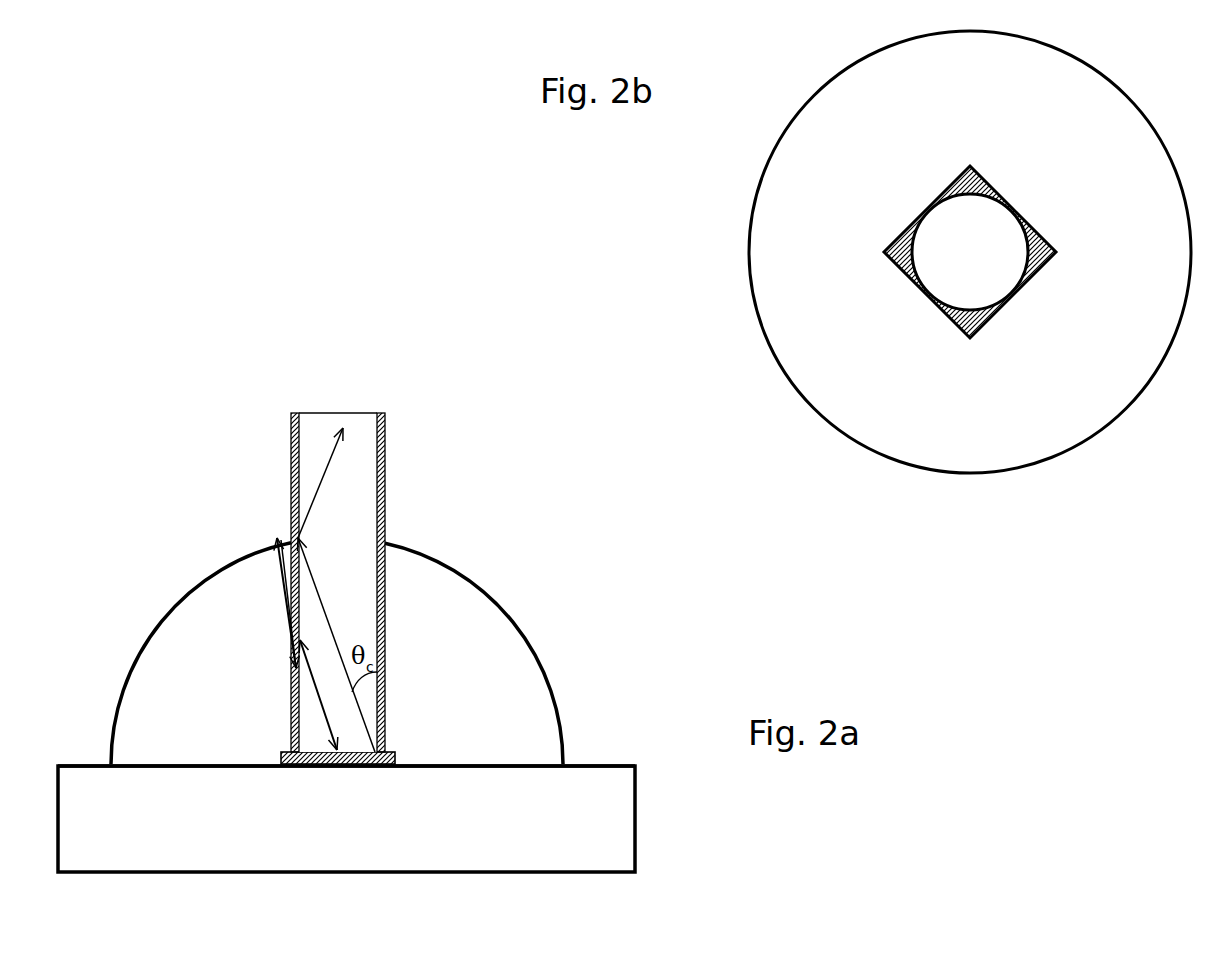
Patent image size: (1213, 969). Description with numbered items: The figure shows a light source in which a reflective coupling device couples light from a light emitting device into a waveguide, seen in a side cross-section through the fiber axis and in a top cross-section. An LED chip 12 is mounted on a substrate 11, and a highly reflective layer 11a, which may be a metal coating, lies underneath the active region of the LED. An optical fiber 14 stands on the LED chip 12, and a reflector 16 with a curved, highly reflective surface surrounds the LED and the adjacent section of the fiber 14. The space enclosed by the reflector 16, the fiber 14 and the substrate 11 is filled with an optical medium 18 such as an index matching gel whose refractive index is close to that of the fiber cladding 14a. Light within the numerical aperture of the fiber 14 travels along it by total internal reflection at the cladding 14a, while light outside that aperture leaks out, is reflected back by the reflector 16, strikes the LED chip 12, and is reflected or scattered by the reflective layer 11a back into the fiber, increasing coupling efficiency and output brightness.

In FIG. 2a, the substrate 11 is at (618, 819).
In FIG. 2a, the reflective layer 11a is at (352, 770).
In FIG. 2a, the LED chip 12 is at (393, 750).
In FIG. 2b, the LED chip 12 is at (1042, 228).
In FIG. 2a, the optical fiber 14 is at (281, 582).
In FIG. 2b, the optical fiber 14 is at (942, 222).
In FIG. 2a, the fiber cladding 14a is at (312, 437).
In FIG. 2a, the reflector 16 is at (176, 604).
In FIG. 2b, the reflector 16 is at (748, 232).
In FIG. 2a, the optical medium 18 is at (522, 715).